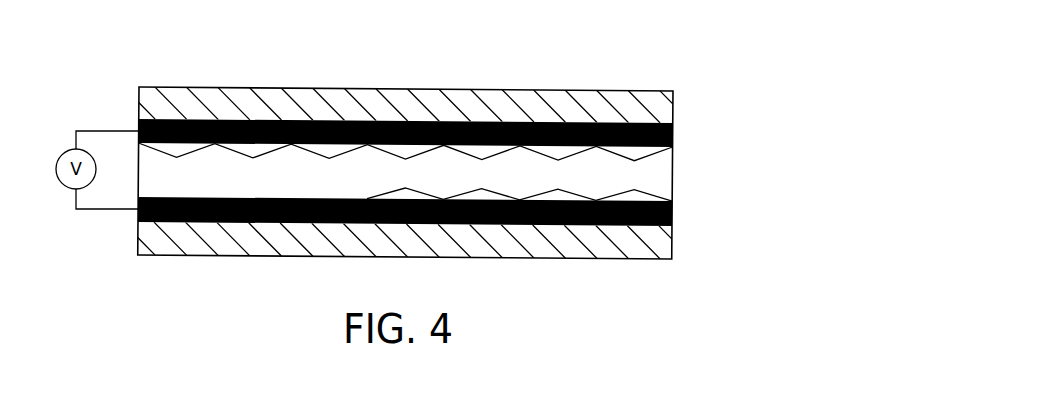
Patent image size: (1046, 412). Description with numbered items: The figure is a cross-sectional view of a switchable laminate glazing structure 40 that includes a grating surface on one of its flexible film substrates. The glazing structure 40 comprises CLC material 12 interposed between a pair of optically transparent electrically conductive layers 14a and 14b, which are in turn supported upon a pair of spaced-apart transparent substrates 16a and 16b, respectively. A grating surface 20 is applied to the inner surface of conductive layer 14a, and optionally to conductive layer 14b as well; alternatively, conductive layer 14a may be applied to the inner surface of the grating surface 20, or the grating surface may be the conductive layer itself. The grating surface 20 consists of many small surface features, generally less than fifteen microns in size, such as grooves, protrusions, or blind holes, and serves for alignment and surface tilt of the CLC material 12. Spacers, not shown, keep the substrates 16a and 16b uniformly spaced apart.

The glazing structure 40 is at (266, 69).
The transparent substrate 16a is at (652, 105).
The optically transparent electrically conductive layer 14a is at (674, 133).
The grating surface 20 is at (652, 157).
The CLC material 12 is at (652, 175).
The optically transparent electrically conductive layer 14b is at (674, 219).
The transparent substrate 16b is at (660, 243).